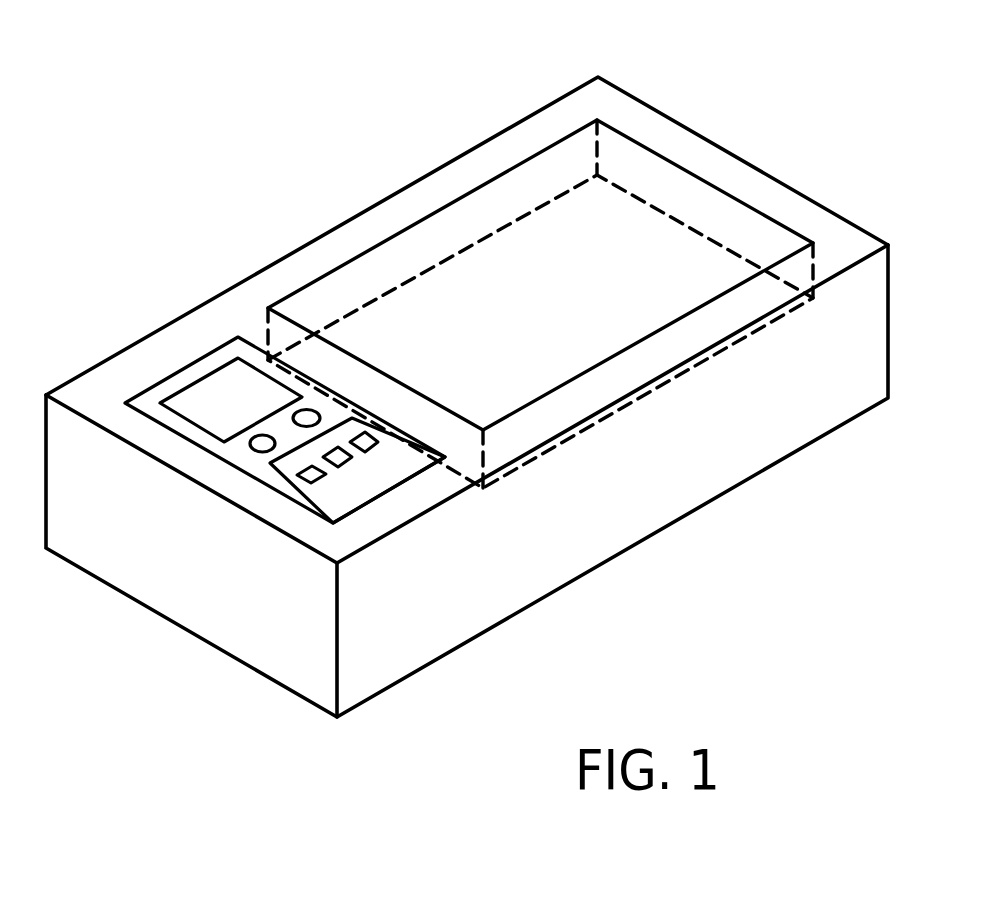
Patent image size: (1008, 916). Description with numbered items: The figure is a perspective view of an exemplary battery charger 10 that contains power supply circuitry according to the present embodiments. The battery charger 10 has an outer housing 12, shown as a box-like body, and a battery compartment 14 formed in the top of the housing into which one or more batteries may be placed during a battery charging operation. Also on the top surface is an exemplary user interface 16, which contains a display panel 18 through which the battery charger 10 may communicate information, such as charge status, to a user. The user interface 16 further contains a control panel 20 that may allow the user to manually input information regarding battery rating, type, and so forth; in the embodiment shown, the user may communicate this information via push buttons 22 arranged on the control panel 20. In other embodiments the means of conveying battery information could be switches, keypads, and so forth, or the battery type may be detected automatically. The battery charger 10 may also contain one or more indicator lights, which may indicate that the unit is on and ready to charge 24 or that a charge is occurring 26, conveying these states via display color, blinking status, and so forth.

The battery charger 10 is at (467, 364).
The outer housing 12 is at (347, 243).
The battery compartment 14 is at (652, 177).
The user interface 16 is at (403, 485).
The display panel 18 is at (211, 379).
The control panel 20 is at (295, 487).
The push buttons 22 is at (373, 449).
The ready to charge indication 24 is at (250, 445).
The charge occurring indication 26 is at (313, 408).